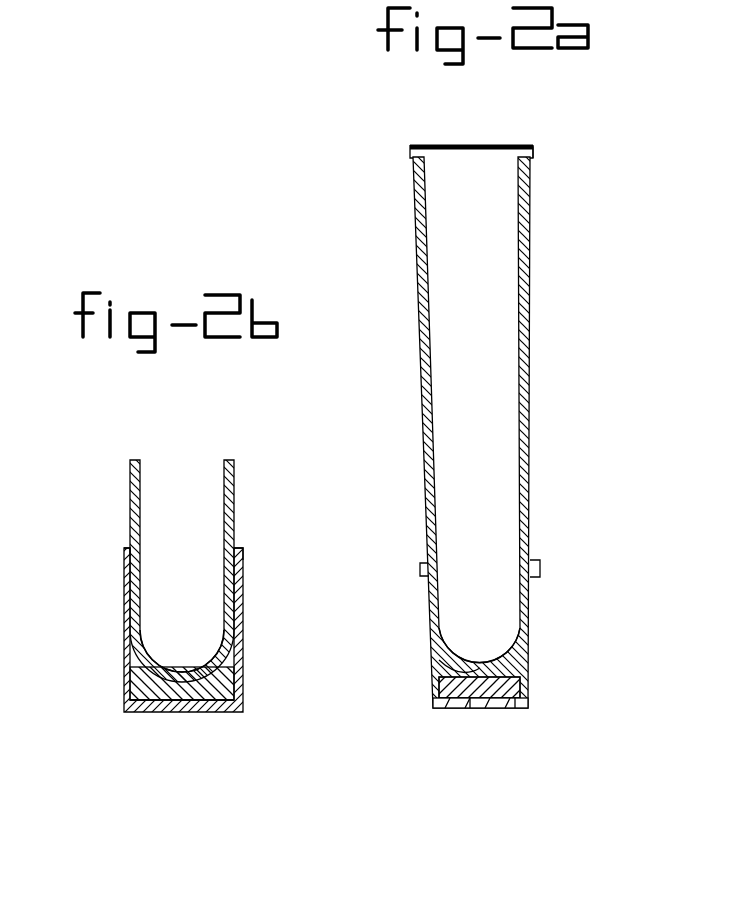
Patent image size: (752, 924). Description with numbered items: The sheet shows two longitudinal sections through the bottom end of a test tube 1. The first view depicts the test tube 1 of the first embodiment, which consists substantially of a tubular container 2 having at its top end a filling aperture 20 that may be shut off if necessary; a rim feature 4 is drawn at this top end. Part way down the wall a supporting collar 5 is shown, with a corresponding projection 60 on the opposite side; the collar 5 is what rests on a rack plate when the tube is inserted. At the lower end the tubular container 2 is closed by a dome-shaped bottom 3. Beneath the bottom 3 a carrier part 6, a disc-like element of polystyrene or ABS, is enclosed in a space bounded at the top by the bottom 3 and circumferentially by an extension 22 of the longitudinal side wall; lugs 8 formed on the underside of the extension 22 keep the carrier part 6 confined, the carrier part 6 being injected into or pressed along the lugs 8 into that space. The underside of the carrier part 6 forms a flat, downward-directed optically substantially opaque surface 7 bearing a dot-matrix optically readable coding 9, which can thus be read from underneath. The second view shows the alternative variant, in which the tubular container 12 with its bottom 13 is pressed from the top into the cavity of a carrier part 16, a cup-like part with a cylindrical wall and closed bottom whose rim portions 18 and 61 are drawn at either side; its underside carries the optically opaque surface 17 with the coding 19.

In FIG. 2A, the test tube 1 is at (545, 273).
In FIG. 2A, the tubular container 2 is at (531, 345).
In FIG. 2A, the bottom 3 is at (482, 668).
In FIG. 2A, the rim flange 4 is at (534, 150).
In FIG. 2A, the supporting collar 5 is at (540, 572).
In FIG. 2A, the carrier part 6 is at (520, 690).
In FIG. 2A, the optically substantially opaque surface 7 is at (485, 708).
In FIG. 2A, the lugs 8 is at (515, 708).
In FIG. 2A, the optically readable coding 9 is at (470, 708).
In FIG. 2A, the filling aperture 20 is at (456, 150).
In FIG. 2A, the extension 22 is at (441, 668).
In FIG. 2A, the left lug 60 is at (425, 558).
In FIG. 2B, the tubular container 12 is at (130, 490).
In FIG. 2B, the bottom 13 is at (215, 660).
In FIG. 2B, the carrier part 16 is at (124, 632).
In FIG. 2B, the optically opaque surface 17 is at (172, 712).
In FIG. 2B, the cup rim right 18 is at (244, 573).
In FIG. 2B, the coding 19 is at (205, 712).
In FIG. 2B, the cup rim left notch 61 is at (128, 548).